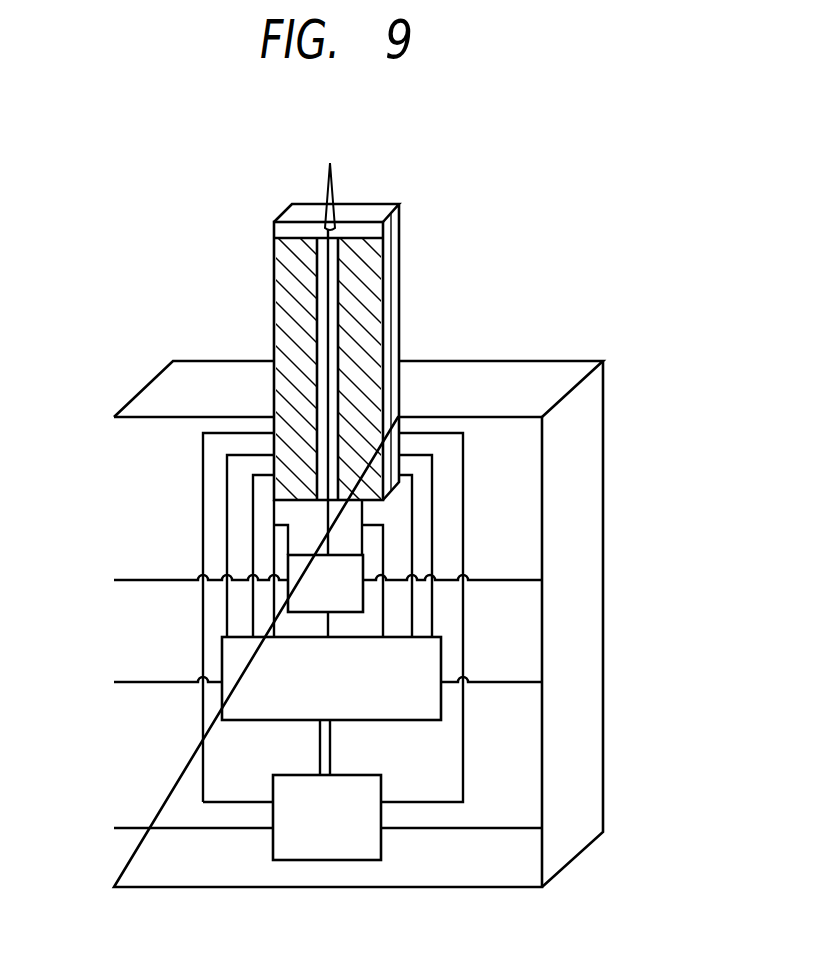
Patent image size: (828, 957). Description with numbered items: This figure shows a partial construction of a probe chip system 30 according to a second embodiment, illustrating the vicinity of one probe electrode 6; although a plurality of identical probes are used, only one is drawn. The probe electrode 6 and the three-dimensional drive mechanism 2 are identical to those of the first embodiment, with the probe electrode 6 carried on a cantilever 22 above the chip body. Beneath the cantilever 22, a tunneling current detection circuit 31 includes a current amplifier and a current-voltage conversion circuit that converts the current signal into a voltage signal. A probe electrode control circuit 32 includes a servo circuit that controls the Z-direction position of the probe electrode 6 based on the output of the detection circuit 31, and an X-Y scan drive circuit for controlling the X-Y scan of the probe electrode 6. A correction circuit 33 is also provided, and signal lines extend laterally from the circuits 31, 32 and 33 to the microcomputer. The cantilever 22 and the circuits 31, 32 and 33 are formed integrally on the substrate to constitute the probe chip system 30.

The three-dimensional drive mechanism 2 is at (243, 273).
The probe electrode 6 is at (332, 194).
The cantilever 22 is at (410, 207).
The probe chip system 30 is at (640, 232).
The tunneling current detection circuit 31 is at (297, 567).
The probe electrode control circuit 32 is at (223, 655).
The correction circuit 33 is at (280, 792).